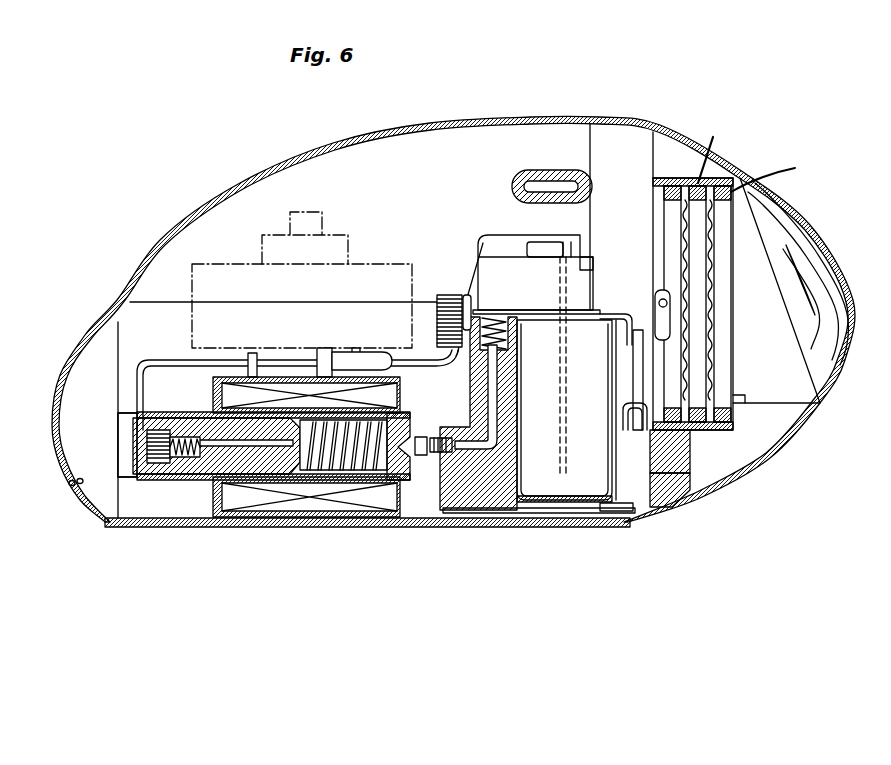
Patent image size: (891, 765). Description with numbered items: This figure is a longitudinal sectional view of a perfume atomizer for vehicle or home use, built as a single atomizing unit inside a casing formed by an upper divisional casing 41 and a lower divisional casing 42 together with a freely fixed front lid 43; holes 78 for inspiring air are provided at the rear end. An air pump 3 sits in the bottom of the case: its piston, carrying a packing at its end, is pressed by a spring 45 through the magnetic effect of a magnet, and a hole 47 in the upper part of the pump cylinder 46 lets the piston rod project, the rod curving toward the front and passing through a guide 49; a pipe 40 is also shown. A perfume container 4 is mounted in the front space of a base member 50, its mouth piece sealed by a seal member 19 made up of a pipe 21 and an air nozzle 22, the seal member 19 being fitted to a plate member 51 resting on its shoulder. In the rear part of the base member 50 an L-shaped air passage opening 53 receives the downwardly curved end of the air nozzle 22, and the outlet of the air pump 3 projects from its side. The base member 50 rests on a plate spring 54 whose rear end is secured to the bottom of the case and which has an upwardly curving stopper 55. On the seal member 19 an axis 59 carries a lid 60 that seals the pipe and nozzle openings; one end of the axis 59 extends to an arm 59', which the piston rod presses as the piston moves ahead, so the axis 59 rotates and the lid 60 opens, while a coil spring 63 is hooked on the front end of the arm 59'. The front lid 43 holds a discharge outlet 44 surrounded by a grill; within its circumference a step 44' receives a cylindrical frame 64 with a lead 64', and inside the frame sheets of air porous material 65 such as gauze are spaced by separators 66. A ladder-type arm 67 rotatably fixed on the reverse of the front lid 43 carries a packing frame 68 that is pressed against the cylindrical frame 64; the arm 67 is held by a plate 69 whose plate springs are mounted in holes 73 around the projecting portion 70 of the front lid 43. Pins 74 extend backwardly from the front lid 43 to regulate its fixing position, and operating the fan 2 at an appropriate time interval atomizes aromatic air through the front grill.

The fan 2 is at (379, 268).
The air pump 3 is at (194, 470).
The perfume container 4 is at (545, 490).
The seal member 19 is at (597, 284).
The pipe 21 is at (560, 257).
The air nozzle 22 is at (538, 250).
The pipe 40 is at (175, 362).
The upper divisional casing 41 is at (245, 186).
The lower divisional casing 42 is at (173, 308).
The front lid 43 is at (626, 150).
The discharge outlet 44 is at (809, 295).
The step 44' is at (757, 397).
The spring 45 is at (383, 424).
The pump cylinder 46 is at (157, 482).
The hole 47 is at (207, 416).
The guide 49 is at (255, 355).
The base member 50 is at (520, 500).
The plate member 51 is at (599, 312).
The air passage opening 53 is at (498, 402).
The plate spring 54 is at (580, 515).
The stopper 55 is at (625, 512).
The axis 59 is at (482, 266).
The arm 59' is at (450, 300).
The lid 60 is at (510, 240).
The coil spring 63 is at (457, 358).
The cylindrical frame 64 is at (718, 150).
The lead 64' is at (780, 174).
The air porous material 65 is at (713, 334).
The separator 66 is at (700, 292).
The arm 67 is at (642, 300).
The packing frame 68 is at (667, 227).
The plate 69 is at (647, 467).
The projecting portion 70 is at (640, 442).
The holes 73 is at (672, 482).
The pins 74 is at (551, 185).
The holes 78 is at (67, 488).